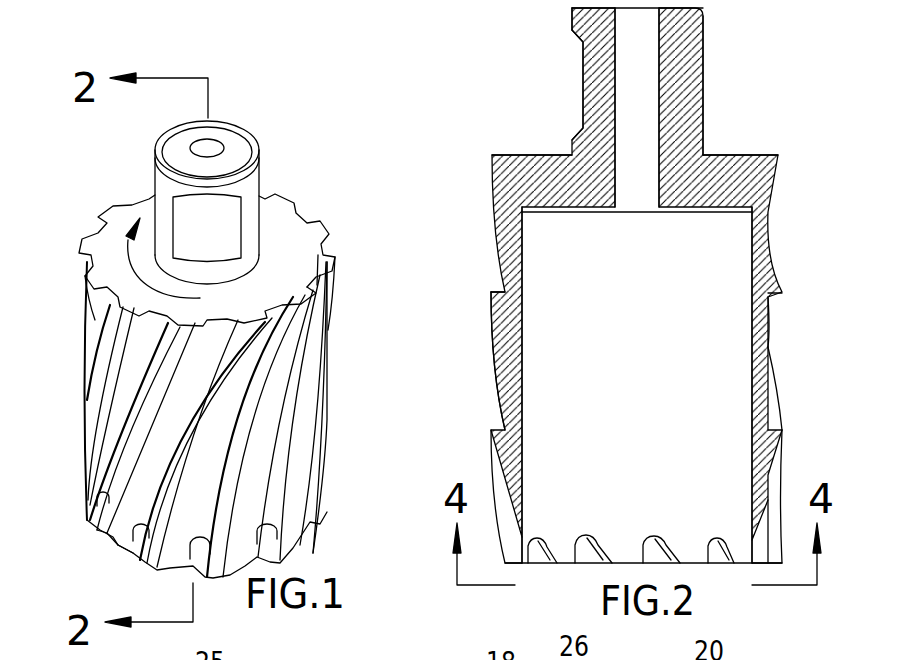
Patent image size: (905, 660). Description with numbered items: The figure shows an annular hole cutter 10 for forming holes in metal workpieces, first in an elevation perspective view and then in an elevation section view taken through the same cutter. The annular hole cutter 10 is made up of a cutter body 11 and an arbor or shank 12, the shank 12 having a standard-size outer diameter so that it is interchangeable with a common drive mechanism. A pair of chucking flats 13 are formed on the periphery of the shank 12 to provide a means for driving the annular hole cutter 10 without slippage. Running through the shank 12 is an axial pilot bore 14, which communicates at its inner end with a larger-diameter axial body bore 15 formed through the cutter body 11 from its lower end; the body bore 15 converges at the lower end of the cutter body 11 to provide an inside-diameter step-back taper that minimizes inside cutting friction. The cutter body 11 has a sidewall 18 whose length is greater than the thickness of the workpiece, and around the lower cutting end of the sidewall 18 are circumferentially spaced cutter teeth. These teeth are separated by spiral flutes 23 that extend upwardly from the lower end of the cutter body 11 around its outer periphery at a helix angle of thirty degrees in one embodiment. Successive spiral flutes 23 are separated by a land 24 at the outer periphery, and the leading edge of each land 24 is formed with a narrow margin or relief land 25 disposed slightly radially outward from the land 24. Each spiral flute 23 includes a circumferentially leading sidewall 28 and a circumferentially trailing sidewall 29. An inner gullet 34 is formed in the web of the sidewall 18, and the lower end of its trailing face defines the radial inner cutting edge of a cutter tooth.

In FIG. 1, the annular hole cutter 10 is at (106, 182).
In FIG. 2, the annular hole cutter 10 is at (531, 142).
In FIG. 1, the cutter body 11 is at (100, 276).
In FIG. 2, the cutter body 11 is at (473, 164).
In FIG. 1, the shank 12 is at (280, 140).
In FIG. 2, the shank 12 is at (728, 72).
In FIG. 1, the chucking flats 13 is at (222, 232).
In FIG. 2, the chucking flats 13 is at (583, 100).
In FIG. 1, the axial pilot bore 14 is at (218, 154).
In FIG. 2, the axial pilot bore 14 is at (659, 101).
In FIG. 2, the axial body bore 15 is at (522, 264).
In FIG. 2, the sidewall 18 is at (752, 258).
In FIG. 1, the spiral flutes 23 is at (132, 372).
In FIG. 2, the spiral flutes 23 is at (505, 405).
In FIG. 1, the land 24 is at (97, 535).
In FIG. 2, the land 24 is at (780, 315).
In FIG. 1, the relief land 25 is at (97, 537).
In FIG. 2, the relief land 25 is at (492, 296).
In FIG. 1, the leading sidewall 28 is at (118, 340).
In FIG. 1, the trailing sidewall 29 is at (358, 216).
In FIG. 1, the inner gullet 34 is at (133, 533).
In FIG. 2, the inner gullet 34 is at (645, 540).